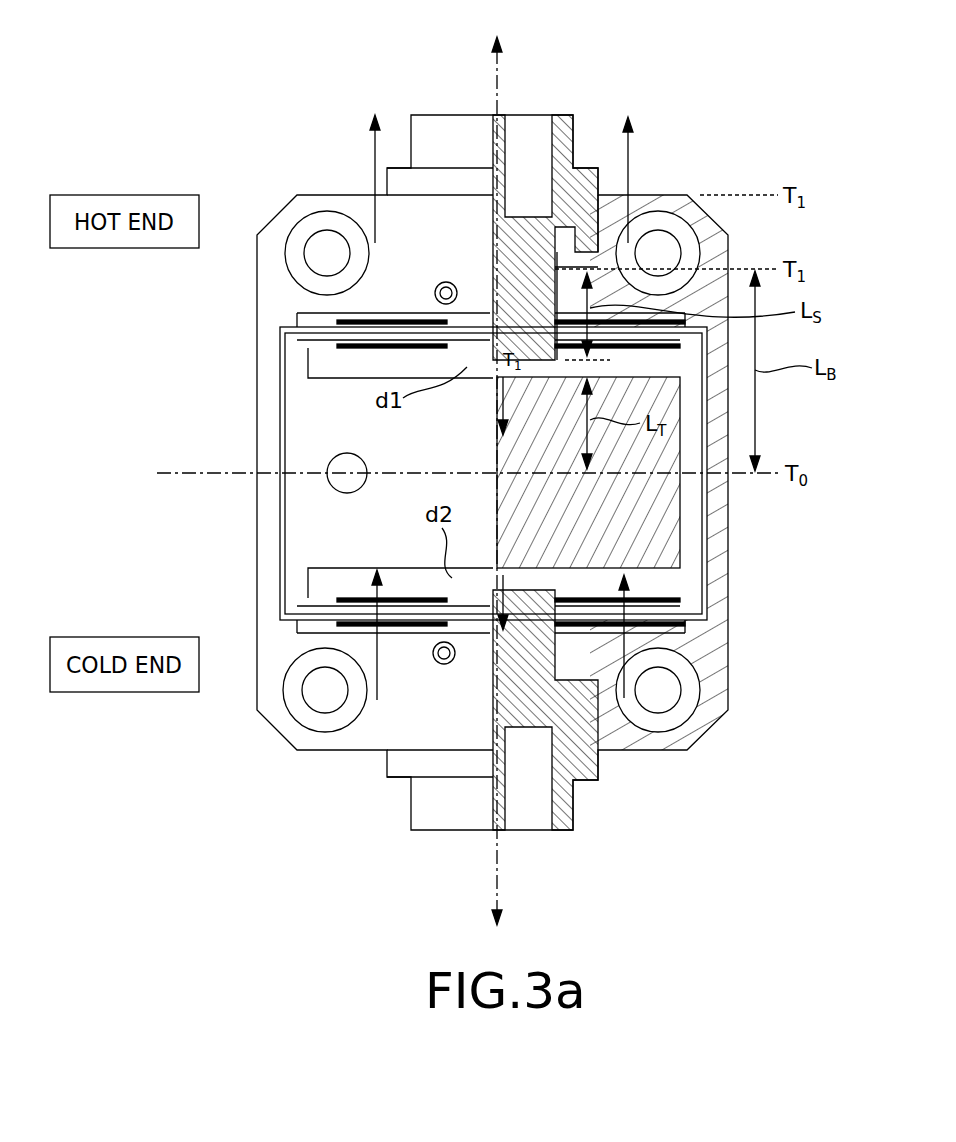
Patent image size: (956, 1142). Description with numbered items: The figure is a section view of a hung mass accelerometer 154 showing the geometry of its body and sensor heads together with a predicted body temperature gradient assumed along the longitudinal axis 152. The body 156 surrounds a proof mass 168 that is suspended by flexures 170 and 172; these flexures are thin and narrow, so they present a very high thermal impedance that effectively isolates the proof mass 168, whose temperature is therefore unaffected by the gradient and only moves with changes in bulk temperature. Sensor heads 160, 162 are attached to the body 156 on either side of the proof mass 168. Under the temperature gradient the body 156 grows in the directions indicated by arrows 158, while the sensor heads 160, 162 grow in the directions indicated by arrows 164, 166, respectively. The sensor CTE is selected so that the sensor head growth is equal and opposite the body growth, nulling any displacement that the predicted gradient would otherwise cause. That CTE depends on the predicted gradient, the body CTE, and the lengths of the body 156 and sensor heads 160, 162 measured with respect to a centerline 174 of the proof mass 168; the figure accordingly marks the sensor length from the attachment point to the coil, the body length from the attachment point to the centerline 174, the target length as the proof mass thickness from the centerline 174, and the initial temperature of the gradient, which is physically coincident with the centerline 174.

The longitudinal axis 152 is at (497, 80).
The hung mass accelerometer 154 is at (198, 113).
The body 156 is at (257, 290).
The arrows 158 is at (373, 155).
The sensor head 160 is at (430, 347).
The sensor head 162 is at (427, 597).
The arrows 164 is at (505, 405).
The arrows 166 is at (513, 590).
The proof mass 168 is at (418, 465).
The flexure 170 is at (335, 332).
The flexure 172 is at (327, 615).
The centerline 174 is at (173, 475).